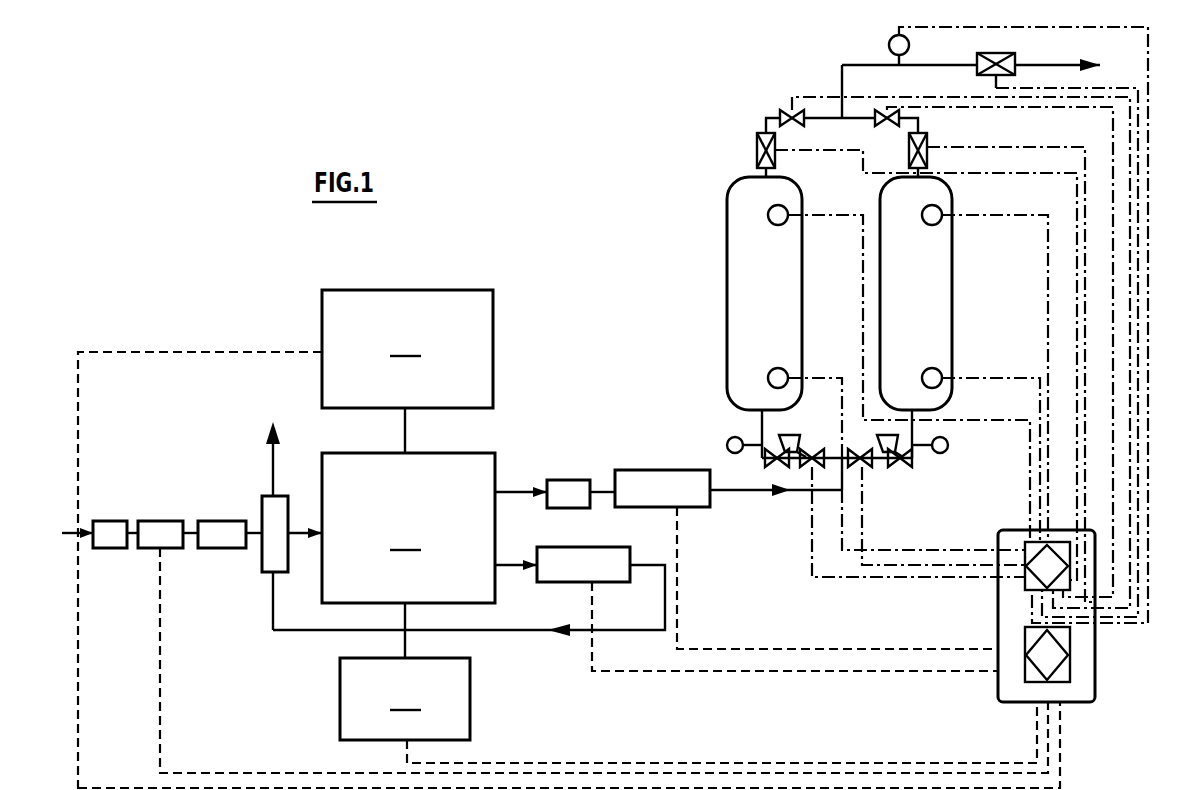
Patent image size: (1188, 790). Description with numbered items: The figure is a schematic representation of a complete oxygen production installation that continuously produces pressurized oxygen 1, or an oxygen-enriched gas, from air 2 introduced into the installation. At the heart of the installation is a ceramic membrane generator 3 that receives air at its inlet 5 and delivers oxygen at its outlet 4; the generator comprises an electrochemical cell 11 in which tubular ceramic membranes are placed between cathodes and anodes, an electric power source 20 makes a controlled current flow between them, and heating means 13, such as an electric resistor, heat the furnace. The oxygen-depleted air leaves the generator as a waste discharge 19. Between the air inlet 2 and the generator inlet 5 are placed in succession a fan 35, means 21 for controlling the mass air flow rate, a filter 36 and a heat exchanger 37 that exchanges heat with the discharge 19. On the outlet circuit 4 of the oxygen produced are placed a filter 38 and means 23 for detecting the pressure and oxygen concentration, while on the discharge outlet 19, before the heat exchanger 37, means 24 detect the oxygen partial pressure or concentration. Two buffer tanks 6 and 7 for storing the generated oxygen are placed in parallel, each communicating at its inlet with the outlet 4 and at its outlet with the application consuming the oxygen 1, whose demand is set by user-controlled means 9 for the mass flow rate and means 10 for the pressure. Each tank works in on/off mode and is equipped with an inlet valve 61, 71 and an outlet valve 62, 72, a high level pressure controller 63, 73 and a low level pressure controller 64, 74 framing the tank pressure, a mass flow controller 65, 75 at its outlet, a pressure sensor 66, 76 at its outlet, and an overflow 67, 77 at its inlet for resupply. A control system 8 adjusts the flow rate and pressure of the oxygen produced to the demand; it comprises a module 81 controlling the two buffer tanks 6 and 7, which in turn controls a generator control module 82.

The oxygen produced 1 is at (1068, 63).
The air inlet 2 is at (68, 535).
The generator 3 is at (350, 572).
The outlet 4 is at (498, 490).
The inlet 5 is at (304, 500).
The buffer tank 6 is at (752, 242).
The buffer tank 7 is at (930, 290).
The control system 8 is at (1018, 610).
The means for controlling the mass flow rate 9 is at (1000, 54).
The means for controlling the pressure 10 is at (892, 36).
The electrochemical cell 11 is at (408, 555).
The heating means 13 is at (688, 710).
The waste discharge 19 is at (516, 542).
The electric power source 20 is at (569, 540).
The means for controlling the mass air flow rate 21 is at (163, 530).
The means for detecting the pressure 23 is at (634, 480).
The means for detecting the oxygen partial pressure 24 is at (572, 561).
The fan 35 is at (108, 527).
The filter 36 is at (208, 529).
The heat exchanger 37 is at (270, 544).
The filter 38 is at (559, 485).
The inlet valve 61 is at (812, 458).
The outlet valve 62 is at (788, 110).
The high level pressure controller 63 is at (786, 210).
The low level pressure controller 64 is at (786, 374).
The mass flow controller 65 is at (755, 160).
The pressure sensor 66 is at (731, 437).
The overflow 67 is at (770, 463).
The inlet valve 71 is at (936, 507).
The outlet valve 72 is at (989, 352).
The high level pressure controller 73 is at (940, 224).
The low level pressure controller 74 is at (940, 370).
The mass flow controller 75 is at (940, 140).
The pressure sensor 76 is at (950, 451).
The overflow 77 is at (898, 463).
The buffer tank control module 81 is at (1032, 545).
The generator control module 82 is at (1072, 670).